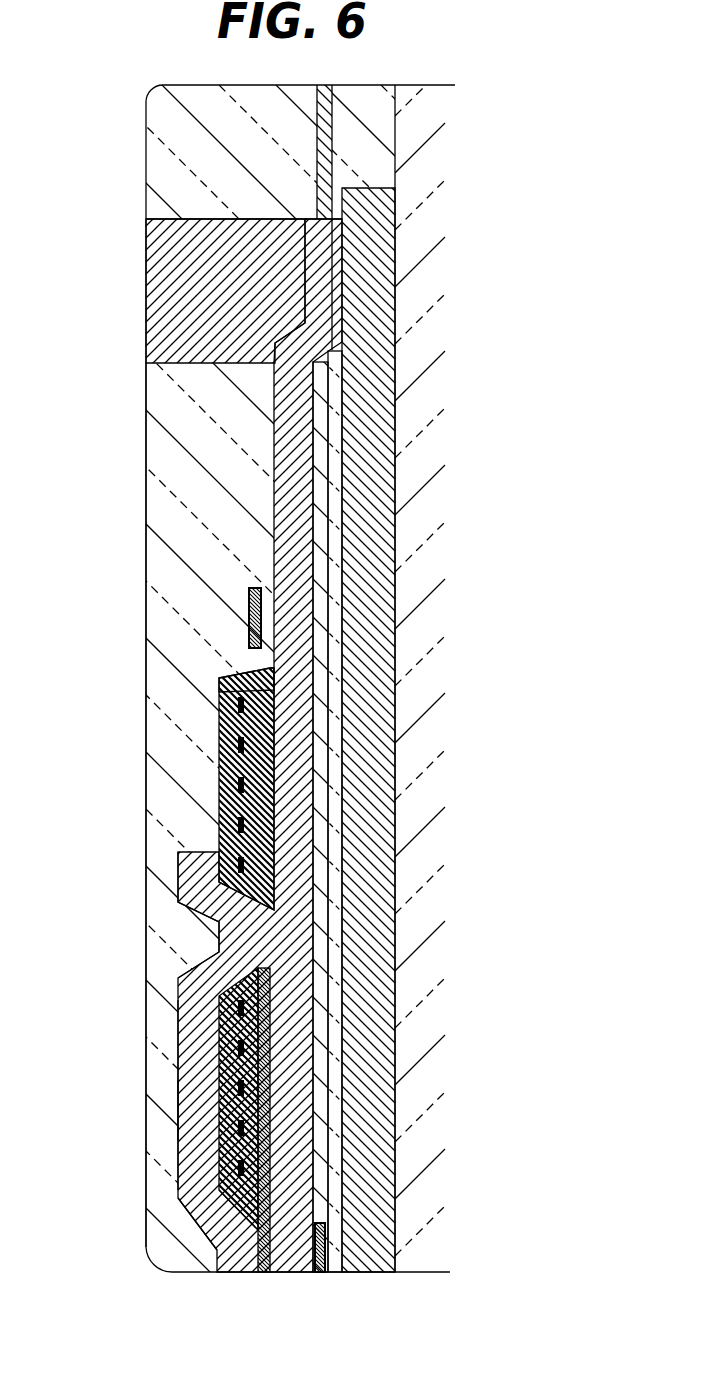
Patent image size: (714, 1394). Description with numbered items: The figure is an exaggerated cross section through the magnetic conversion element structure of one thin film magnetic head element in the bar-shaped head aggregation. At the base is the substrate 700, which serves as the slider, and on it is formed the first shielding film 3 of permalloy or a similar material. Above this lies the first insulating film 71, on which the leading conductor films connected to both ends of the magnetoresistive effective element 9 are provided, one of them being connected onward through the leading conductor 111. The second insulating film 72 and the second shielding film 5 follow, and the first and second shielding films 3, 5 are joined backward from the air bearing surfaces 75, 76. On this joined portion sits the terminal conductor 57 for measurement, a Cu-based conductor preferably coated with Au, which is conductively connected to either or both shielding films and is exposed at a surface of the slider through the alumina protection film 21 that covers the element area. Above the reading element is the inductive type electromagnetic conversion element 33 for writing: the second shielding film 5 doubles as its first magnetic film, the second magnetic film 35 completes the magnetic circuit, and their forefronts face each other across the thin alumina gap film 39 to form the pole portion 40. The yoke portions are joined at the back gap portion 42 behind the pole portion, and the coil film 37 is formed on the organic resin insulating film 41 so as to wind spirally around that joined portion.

The first shielding film 3 is at (365, 975).
The second shielding film 5 is at (280, 737).
The magnetoresistive effective element 9 is at (326, 1238).
The protection film 21 is at (220, 433).
The inductive type electromagnetic conversion element 33 is at (177, 1110).
The second magnetic film 35 is at (197, 1065).
The coil film 37 is at (220, 827).
The gap film 39 is at (245, 1170).
The pole portion 40 is at (305, 1285).
The insulating film 41 is at (220, 690).
The back gap portion 42 is at (213, 942).
The terminal conductor 57 is at (225, 300).
The first insulating film 71 is at (335, 890).
The second insulating film 72 is at (320, 787).
The air bearing surface 75 is at (374, 1281).
The air bearing surface 76 is at (425, 1272).
The leading conductor 111 is at (249, 612).
The substrate 700 is at (418, 526).